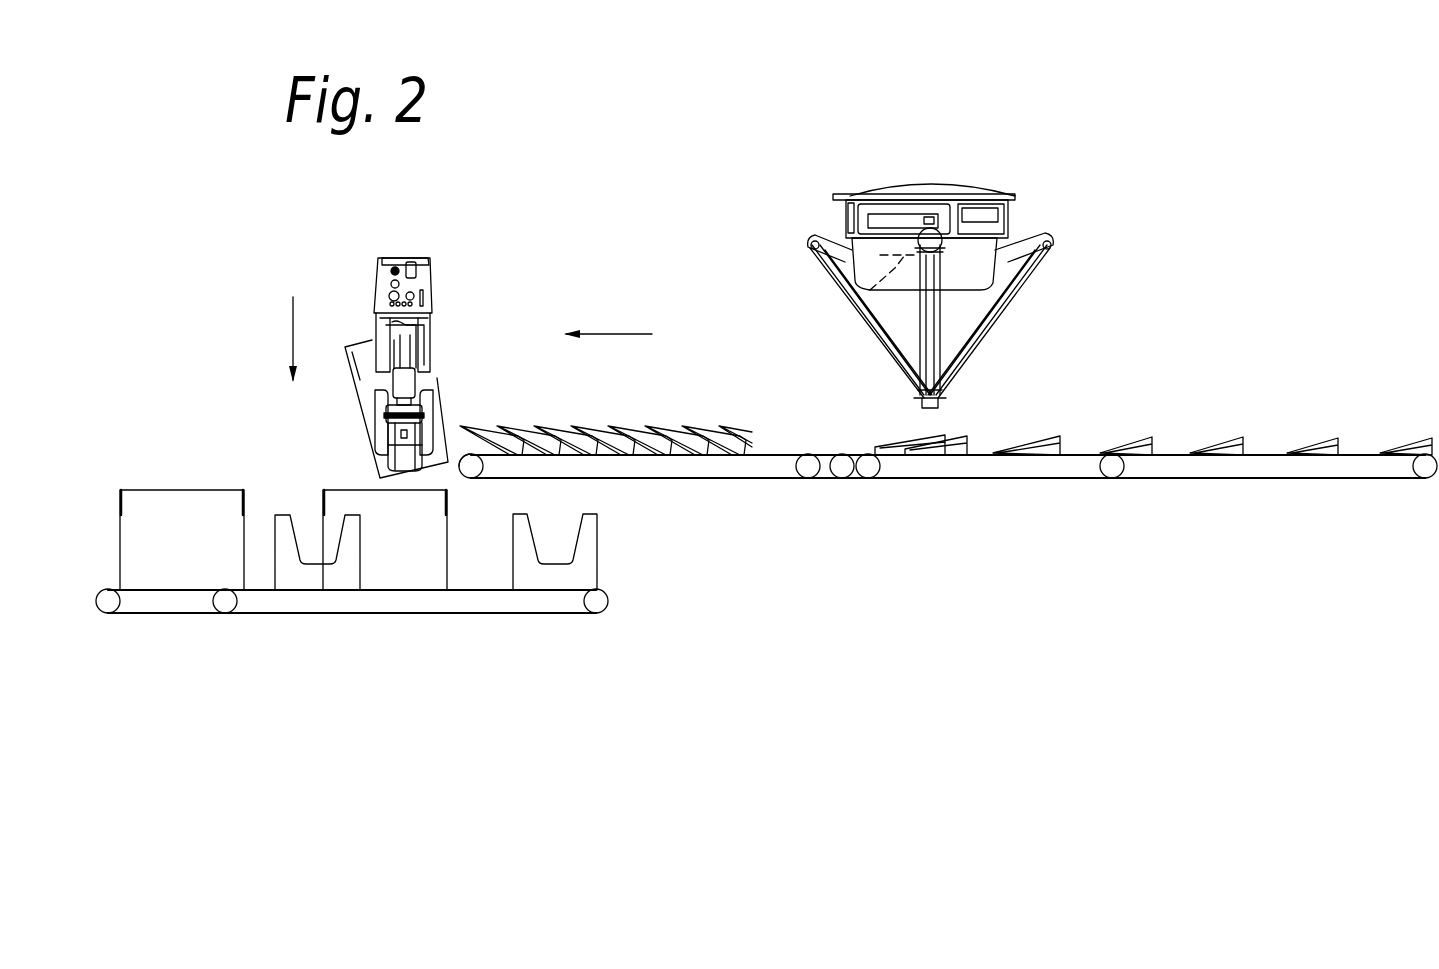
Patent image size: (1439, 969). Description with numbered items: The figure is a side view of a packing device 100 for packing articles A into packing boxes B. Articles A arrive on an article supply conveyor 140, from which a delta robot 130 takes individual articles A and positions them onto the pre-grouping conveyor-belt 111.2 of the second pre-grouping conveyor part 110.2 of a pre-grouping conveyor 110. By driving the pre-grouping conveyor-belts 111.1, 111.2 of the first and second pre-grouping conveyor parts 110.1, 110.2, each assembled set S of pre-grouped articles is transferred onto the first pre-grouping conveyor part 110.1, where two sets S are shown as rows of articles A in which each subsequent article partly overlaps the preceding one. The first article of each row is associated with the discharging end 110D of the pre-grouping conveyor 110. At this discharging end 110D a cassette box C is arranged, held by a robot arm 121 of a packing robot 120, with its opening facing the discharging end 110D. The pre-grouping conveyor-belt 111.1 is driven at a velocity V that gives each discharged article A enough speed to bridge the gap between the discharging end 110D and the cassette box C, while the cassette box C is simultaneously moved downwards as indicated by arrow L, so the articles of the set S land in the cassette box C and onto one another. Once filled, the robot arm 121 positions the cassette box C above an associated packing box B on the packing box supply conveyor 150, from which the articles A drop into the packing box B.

The packing device 100 is at (618, 222).
The pre-grouping conveyor 110 is at (861, 490).
The first pre-grouping conveyor part 110.1 is at (725, 490).
The second pre-grouping conveyor part 110.2 is at (987, 490).
The discharging end 110D is at (490, 490).
The pre-grouping conveyor-belt 111.1 is at (790, 455).
The pre-grouping conveyor-belt 111.2 is at (1064, 455).
The packing robot 120 is at (340, 273).
The robot arm 121 is at (422, 383).
The delta robot 130 is at (1035, 205).
The article supply conveyor 140 is at (1248, 408).
The packing box supply conveyor 150 is at (283, 645).
The articles A is at (592, 434).
The set of pre-grouped articles S is at (673, 434).
The packing box B is at (170, 553).
The cassette box C is at (360, 390).
The arrow indicating downward movement L is at (286, 339).
The velocity V is at (608, 323).